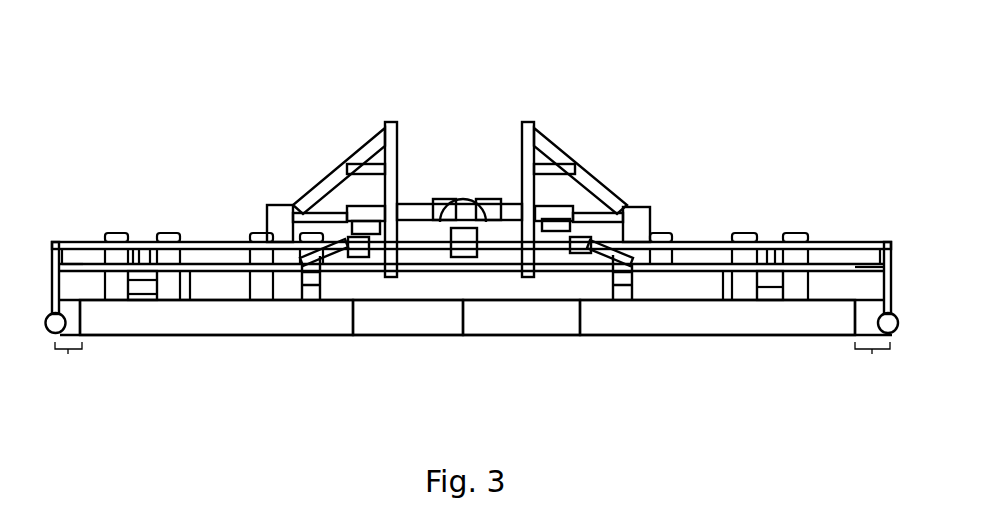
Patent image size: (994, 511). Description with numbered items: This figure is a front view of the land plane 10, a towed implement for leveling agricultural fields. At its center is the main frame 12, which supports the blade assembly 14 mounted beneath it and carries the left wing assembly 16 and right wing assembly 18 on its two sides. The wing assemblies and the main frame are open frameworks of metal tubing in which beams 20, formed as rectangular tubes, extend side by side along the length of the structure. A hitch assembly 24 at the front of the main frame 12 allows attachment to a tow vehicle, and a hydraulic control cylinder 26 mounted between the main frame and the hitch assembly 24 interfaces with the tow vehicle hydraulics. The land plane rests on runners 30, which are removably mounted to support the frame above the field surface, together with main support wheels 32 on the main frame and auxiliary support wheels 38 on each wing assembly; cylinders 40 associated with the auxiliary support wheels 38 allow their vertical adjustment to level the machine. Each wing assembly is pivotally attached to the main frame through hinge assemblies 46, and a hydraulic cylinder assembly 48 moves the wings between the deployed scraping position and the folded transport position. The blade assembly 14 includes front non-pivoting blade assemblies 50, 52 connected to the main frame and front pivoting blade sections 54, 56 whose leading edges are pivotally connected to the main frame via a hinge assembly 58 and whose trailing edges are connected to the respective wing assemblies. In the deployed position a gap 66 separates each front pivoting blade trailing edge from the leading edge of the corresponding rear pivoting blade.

The land plane 10 is at (221, 47).
The main frame 12 is at (432, 202).
The blade assembly 14 is at (279, 410).
The left wing assembly 16 is at (715, 240).
The right wing assembly 18 is at (205, 242).
The beams 20 is at (382, 250).
The hitch assembly 24 is at (472, 248).
The hydraulic control cylinder 26 is at (468, 217).
The runners 30 is at (55, 338).
The main support wheels 32 is at (258, 235).
The auxiliary support wheels 38 is at (115, 233).
The hydraulic or pressurized air cylinders 40 is at (147, 257).
The hinge assemblies 46 is at (360, 229).
The hydraulic cylinder assembly 48 is at (367, 207).
The front non-pivoting blade assembly 50 is at (507, 337).
The front non-pivoting blade assembly 52 is at (428, 337).
The front pivoting blade section 54 is at (740, 337).
The front pivoting blade section 56 is at (213, 337).
The hinge assembly 58 is at (358, 258).
The gap 66 is at (472, 362).